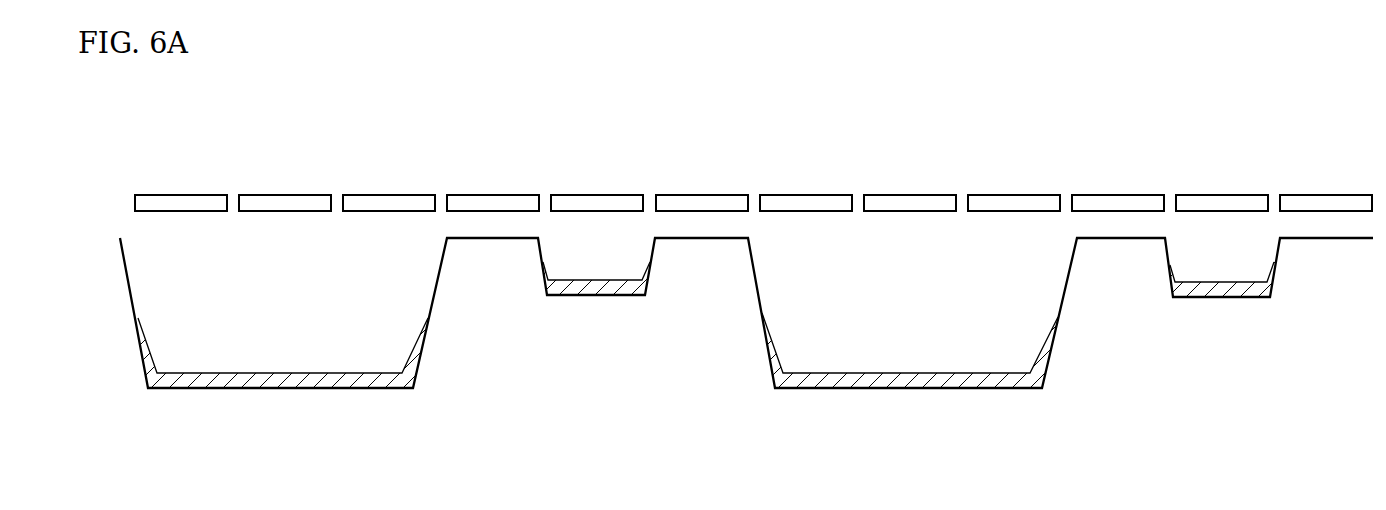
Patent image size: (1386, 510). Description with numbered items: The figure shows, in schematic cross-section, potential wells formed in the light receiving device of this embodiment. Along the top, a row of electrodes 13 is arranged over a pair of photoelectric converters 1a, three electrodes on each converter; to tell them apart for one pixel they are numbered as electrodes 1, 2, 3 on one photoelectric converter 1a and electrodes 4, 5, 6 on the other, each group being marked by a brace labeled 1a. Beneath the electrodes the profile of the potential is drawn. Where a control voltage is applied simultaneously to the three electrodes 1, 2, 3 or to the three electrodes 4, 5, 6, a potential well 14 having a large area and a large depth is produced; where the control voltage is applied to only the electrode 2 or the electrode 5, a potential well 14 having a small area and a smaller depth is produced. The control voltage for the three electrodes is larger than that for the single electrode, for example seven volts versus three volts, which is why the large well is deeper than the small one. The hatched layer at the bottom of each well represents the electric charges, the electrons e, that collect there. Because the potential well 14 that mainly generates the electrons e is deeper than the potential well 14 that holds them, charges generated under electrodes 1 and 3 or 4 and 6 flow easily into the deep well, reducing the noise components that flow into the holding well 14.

The photoelectric converter 1a is at (430, 155).
The electrode 1 is at (493, 181).
The electrode 2 is at (597, 181).
The electrode 3 is at (701, 181).
The electrode 4 is at (805, 181).
The electrode 5 is at (909, 181).
The electrode 6 is at (1014, 181).
The electrode 13 is at (393, 206).
The potential well 14 is at (137, 328).
The electrons e is at (287, 380).